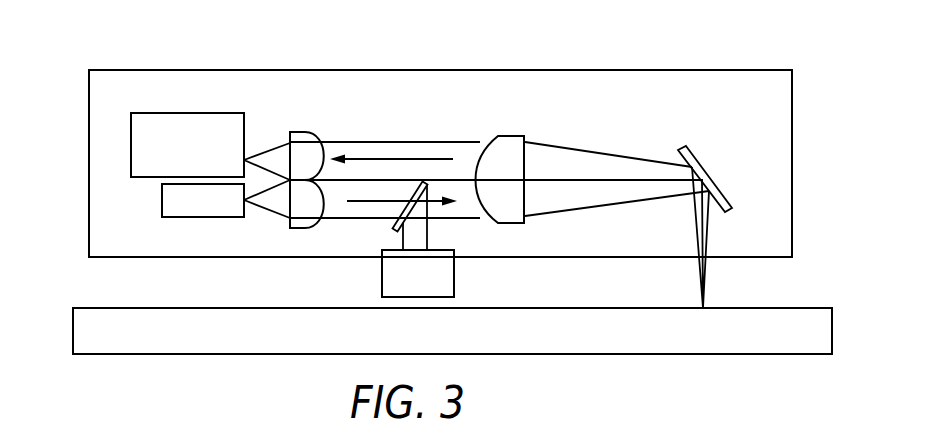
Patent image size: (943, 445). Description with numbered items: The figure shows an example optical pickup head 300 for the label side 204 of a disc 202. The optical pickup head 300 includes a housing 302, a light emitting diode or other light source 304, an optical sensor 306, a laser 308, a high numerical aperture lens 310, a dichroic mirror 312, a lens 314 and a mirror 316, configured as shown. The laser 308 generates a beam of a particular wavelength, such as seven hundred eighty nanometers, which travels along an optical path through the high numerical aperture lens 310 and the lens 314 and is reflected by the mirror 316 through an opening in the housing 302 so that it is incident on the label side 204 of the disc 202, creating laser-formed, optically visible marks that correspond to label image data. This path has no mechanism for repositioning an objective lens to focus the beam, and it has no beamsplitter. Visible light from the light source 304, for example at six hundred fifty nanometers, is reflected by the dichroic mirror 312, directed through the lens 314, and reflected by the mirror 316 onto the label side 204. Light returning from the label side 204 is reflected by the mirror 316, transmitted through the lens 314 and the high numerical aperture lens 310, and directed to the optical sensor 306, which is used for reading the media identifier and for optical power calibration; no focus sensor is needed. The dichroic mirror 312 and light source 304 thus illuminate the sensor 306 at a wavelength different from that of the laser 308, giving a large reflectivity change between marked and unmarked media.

The optical pickup head 300 is at (163, 35).
The housing 302 is at (297, 70).
The light emitting diode 304 is at (382, 272).
The optical sensor 306 is at (187, 113).
The laser 308 is at (200, 218).
The high numerical aperture lens 310 is at (296, 131).
The dichroic mirror 312 is at (393, 230).
The lens 314 is at (513, 135).
The mirror 316 is at (687, 146).
The label side 204 is at (531, 307).
The disc 202 is at (510, 333).